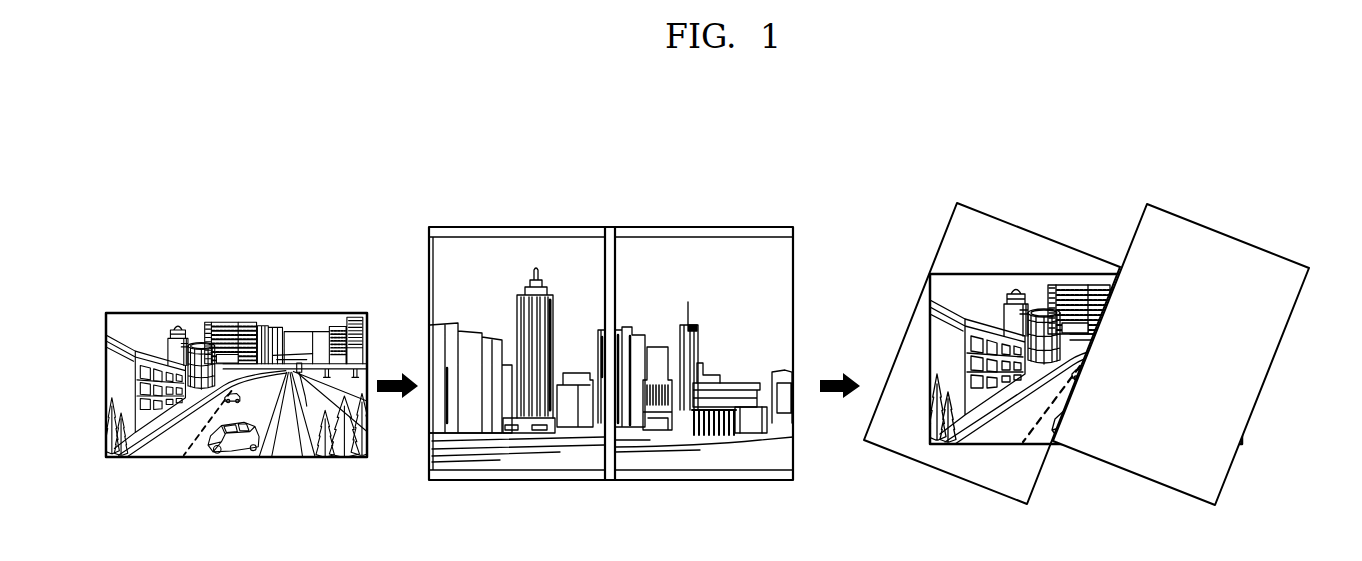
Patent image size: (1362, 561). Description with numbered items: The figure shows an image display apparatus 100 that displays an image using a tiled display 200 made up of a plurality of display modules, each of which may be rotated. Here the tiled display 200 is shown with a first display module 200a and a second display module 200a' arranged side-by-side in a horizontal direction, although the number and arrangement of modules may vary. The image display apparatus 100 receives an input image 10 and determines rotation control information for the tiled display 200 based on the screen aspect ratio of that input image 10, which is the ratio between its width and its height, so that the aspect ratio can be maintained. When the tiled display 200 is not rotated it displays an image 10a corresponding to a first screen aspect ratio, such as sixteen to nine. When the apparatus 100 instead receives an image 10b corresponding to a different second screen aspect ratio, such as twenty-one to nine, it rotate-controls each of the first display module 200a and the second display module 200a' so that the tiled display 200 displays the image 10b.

The input image 10 is at (382, 258).
The image corresponding to a first screen aspect ratio 10a is at (452, 276).
The image corresponding to a second screen aspect ratio 10b is at (302, 325).
The image display apparatus 100 is at (777, 205).
The display panel 200 is at (718, 175).
The first display module 200a is at (774, 337).
The second display module 200a' is at (962, 338).